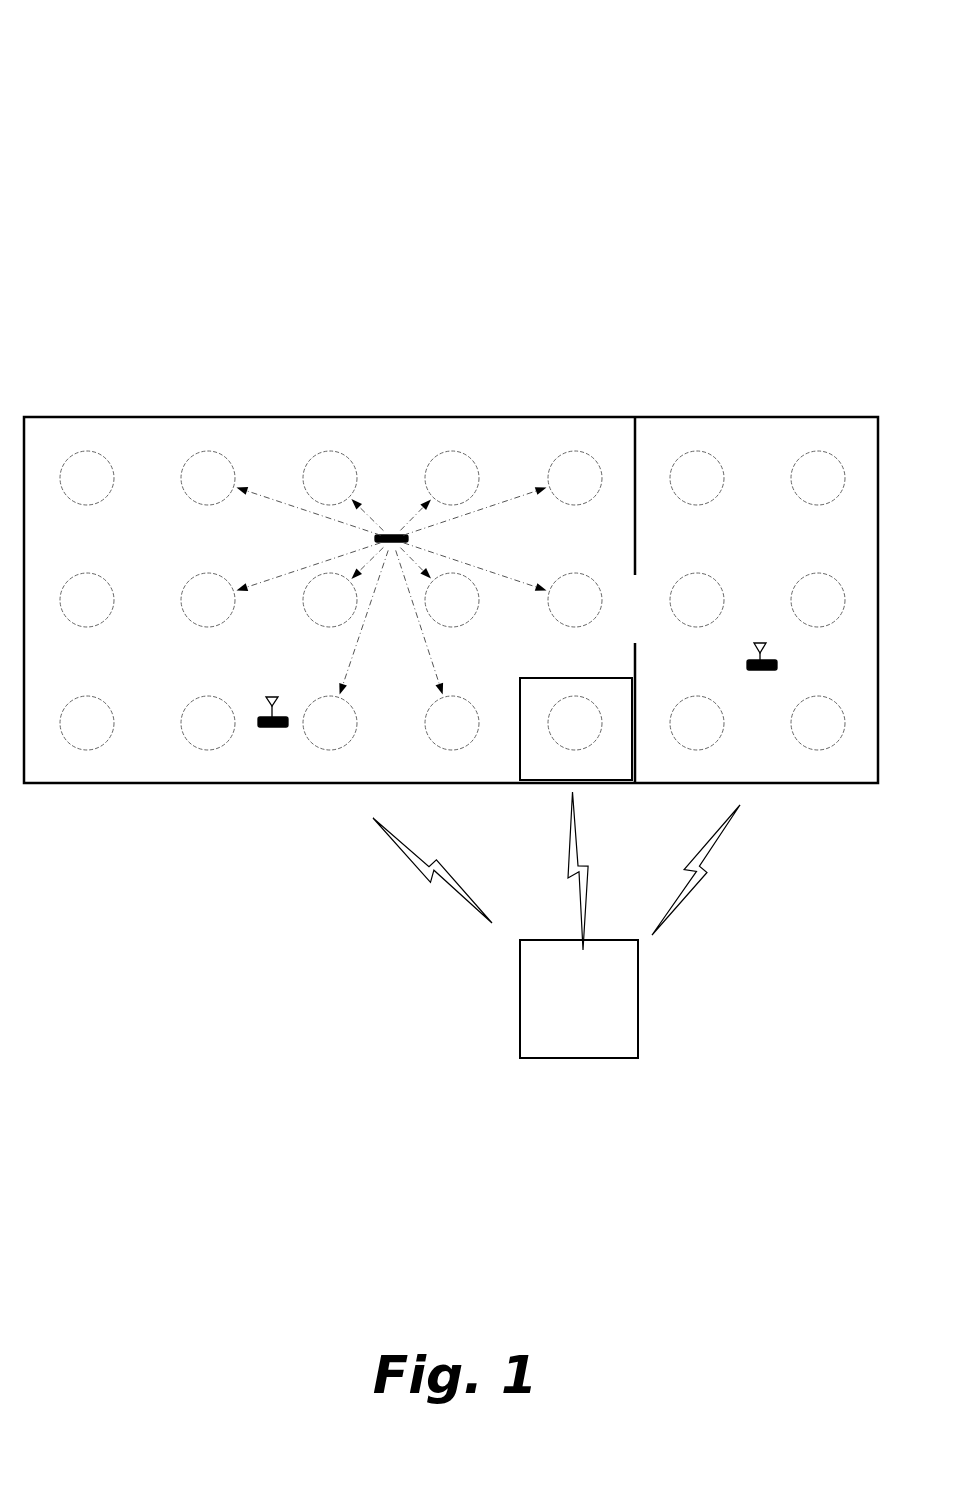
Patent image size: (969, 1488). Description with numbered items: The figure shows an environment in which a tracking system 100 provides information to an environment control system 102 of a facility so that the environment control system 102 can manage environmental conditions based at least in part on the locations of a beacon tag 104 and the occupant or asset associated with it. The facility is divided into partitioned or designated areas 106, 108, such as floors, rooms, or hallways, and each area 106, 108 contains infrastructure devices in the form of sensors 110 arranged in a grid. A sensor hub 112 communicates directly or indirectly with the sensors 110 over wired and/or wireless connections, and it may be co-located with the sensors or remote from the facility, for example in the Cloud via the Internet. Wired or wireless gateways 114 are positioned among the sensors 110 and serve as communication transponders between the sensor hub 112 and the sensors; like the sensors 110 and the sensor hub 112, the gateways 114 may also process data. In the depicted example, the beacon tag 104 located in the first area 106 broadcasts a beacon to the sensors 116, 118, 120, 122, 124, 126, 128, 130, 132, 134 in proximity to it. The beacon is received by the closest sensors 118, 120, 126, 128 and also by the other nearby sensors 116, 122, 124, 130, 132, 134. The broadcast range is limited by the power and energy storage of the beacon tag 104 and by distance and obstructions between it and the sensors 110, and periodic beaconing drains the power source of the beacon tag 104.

The tracking system 100 is at (125, 93).
The environment control system 102 is at (576, 729).
The beacon tag 104 is at (390, 535).
The area 106 is at (329, 600).
The area 108 is at (756, 600).
The sensor 110 is at (452, 590).
The sensor hub 112 is at (579, 999).
The gateway 114 is at (266, 729).
The sensor 116 is at (208, 450).
The sensor 118 is at (330, 450).
The sensor 120 is at (452, 450).
The sensor 122 is at (575, 450).
The sensor 124 is at (203, 626).
The sensor 126 is at (325, 626).
The sensor 128 is at (470, 620).
The sensor 130 is at (594, 620).
The sensor 132 is at (327, 752).
The sensor 134 is at (450, 752).